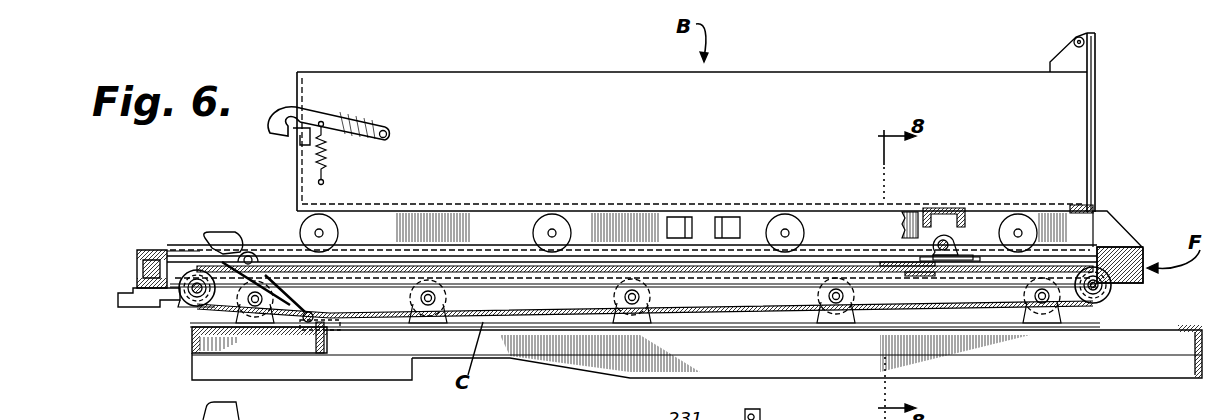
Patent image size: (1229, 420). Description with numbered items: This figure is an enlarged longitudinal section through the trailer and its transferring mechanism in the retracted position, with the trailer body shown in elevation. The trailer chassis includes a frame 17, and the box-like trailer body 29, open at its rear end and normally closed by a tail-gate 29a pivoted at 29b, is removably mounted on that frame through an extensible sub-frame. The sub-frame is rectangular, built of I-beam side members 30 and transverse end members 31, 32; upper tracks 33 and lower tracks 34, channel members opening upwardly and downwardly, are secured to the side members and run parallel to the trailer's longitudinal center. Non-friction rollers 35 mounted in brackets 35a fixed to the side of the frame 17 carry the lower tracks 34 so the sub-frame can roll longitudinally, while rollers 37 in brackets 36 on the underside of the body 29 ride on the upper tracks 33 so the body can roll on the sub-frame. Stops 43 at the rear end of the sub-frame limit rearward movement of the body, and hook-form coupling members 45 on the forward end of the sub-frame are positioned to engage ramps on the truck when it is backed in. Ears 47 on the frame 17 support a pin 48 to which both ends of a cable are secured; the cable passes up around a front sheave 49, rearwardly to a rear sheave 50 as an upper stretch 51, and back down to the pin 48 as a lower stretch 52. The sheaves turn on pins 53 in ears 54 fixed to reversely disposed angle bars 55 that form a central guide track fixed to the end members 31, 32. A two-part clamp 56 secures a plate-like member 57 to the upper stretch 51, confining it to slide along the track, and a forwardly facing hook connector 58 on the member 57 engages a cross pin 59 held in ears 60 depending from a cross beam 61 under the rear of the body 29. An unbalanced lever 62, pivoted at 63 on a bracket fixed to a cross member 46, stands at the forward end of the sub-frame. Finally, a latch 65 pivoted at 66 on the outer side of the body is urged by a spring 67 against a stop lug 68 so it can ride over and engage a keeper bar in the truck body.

The trailer frame 17 is at (1005, 357).
The trailer body 29 is at (812, 78).
The tail-gate 29a is at (1097, 130).
The tail-gate pivot 29b is at (1086, 32).
The side members 30 is at (290, 258).
The rear end member 31 is at (1137, 250).
The front end member 32 is at (150, 253).
The upper tracks 33 is at (178, 250).
The lower tracks 34 is at (527, 290).
The non-friction rollers 35 is at (651, 297).
The brackets 35a is at (648, 322).
The brackets 36 is at (480, 214).
The non-friction rollers 37 is at (535, 230).
The stops 43 is at (1112, 218).
The coupling members 45 is at (118, 300).
The cross member 46 is at (192, 350).
The ears 47 is at (308, 322).
The pin 48 is at (313, 310).
The front sheave 49 is at (190, 307).
The rear sheave 50 is at (1112, 293).
The upper stretch 51 is at (590, 267).
The lower stretch 52 is at (772, 312).
The pins 53 is at (197, 283).
The ears 54 is at (195, 300).
The angle bars 55 is at (755, 262).
The two-part clamp 56 is at (917, 274).
The plate-like member 57 is at (890, 260).
The connector 58 is at (958, 257).
The cross pin 59 is at (944, 240).
The ears 60 is at (932, 230).
The cross beam 61 is at (940, 233).
The unbalanced lever 62 is at (222, 232).
The lever pivot 63 is at (248, 256).
The latches 65 is at (361, 127).
The latch pivot 66 is at (389, 134).
The spring 67 is at (326, 155).
The stop lug 68 is at (298, 142).